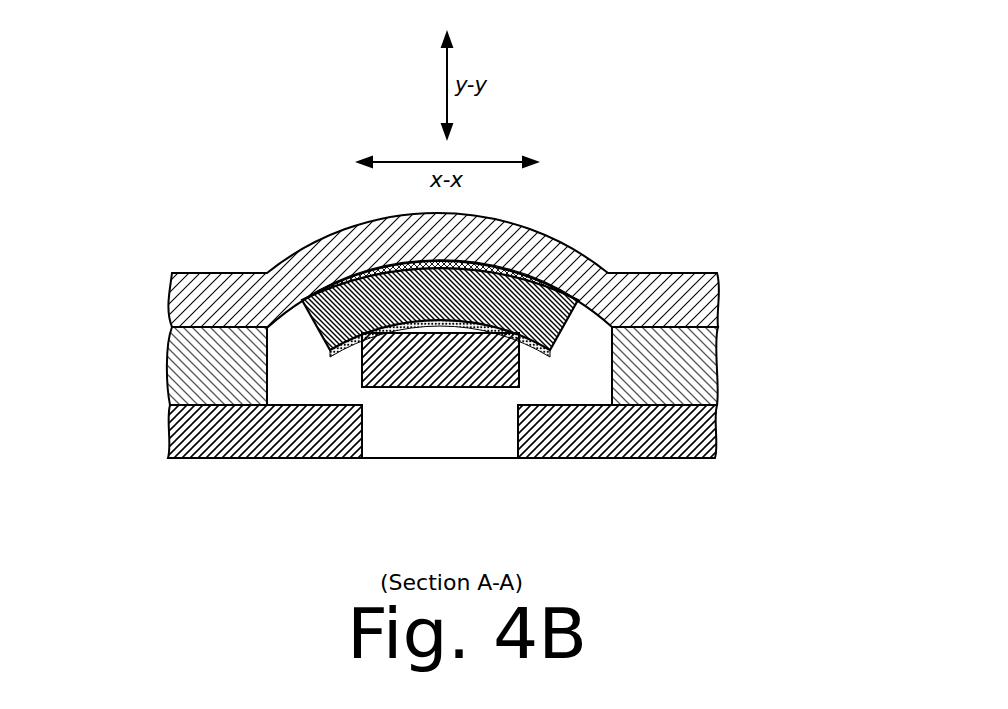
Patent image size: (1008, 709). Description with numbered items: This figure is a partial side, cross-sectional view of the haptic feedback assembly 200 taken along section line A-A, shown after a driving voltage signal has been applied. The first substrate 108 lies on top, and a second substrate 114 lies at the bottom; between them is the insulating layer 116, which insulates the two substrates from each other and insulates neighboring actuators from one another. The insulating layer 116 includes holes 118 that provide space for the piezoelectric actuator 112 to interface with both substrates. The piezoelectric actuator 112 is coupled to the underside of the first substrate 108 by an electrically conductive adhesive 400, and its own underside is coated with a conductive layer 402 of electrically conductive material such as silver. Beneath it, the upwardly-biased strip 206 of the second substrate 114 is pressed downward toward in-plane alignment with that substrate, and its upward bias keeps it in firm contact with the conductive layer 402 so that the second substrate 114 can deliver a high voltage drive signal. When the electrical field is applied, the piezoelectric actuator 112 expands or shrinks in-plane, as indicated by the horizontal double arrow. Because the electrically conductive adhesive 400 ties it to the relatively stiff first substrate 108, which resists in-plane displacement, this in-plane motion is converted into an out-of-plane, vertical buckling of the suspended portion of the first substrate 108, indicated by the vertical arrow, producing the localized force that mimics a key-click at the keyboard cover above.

The haptic feedback assembly 200 is at (176, 175).
The first substrate 108 is at (660, 285).
The piezoelectric actuator 112 is at (537, 308).
The second substrate 114 is at (717, 443).
The insulating layer 116 is at (717, 378).
The holes 118 is at (295, 398).
The upwardly-biased strip 206 is at (463, 367).
The electrically conductive adhesive 400 is at (363, 274).
The conductive layer 402 is at (330, 350).